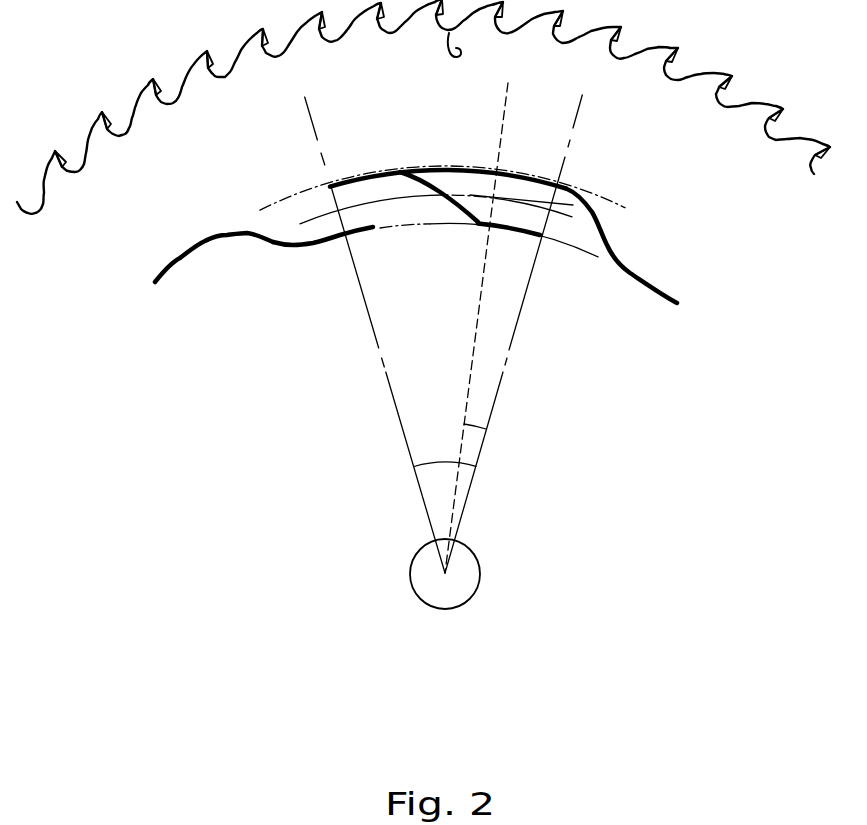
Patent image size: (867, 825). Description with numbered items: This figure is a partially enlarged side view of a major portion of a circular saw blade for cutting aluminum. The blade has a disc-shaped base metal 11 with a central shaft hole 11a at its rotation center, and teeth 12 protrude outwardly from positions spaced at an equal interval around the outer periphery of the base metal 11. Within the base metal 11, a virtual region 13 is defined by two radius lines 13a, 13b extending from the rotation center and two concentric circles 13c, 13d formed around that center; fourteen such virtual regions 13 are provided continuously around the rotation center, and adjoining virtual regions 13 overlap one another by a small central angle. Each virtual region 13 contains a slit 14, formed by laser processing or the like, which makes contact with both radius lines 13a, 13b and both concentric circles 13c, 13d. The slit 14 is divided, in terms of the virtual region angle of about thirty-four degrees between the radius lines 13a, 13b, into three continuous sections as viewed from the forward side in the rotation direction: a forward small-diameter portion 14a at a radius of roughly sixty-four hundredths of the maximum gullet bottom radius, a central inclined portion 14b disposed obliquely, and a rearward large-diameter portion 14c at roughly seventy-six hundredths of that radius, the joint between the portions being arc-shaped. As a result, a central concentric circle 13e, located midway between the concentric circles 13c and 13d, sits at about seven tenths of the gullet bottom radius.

The base metal 11 is at (730, 128).
The central shaft hole 11a is at (452, 598).
The teeth 12 is at (688, 48).
The virtual region 13 is at (374, 178).
The radius line 13a is at (378, 344).
The radius line 13b is at (510, 350).
The concentric circle 13c is at (607, 198).
The concentric circle 13d is at (552, 240).
The central concentric circle 13e is at (590, 207).
The slit 14 is at (346, 218).
The forward small-diameter portion 14a is at (313, 243).
The central inclined portion 14b is at (243, 233).
The rearward large-diameter portion 14c is at (180, 258).